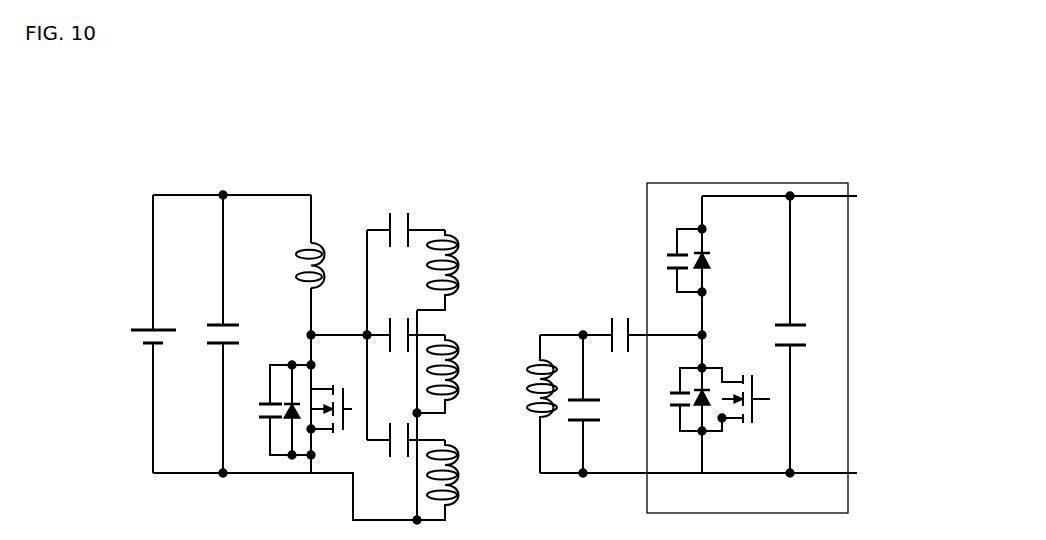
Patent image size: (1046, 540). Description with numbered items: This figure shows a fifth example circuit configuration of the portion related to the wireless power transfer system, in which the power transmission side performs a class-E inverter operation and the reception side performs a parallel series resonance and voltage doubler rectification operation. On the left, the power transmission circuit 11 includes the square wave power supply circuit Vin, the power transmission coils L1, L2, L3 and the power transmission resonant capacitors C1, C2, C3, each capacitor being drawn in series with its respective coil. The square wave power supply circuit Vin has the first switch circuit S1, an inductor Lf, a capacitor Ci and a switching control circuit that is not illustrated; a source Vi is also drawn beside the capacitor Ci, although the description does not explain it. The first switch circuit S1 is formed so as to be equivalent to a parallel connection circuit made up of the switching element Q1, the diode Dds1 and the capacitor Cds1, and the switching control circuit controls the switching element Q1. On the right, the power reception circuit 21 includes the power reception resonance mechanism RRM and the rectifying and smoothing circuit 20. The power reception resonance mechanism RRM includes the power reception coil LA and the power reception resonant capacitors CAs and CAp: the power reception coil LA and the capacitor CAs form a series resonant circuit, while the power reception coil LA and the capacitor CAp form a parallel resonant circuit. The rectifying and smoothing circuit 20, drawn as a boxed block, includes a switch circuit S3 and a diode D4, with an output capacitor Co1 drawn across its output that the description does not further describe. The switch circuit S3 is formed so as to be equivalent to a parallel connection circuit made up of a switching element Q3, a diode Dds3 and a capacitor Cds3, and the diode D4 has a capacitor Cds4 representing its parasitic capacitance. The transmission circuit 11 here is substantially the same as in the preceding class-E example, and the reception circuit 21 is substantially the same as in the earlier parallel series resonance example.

The power transmission circuit 11 is at (143, 108).
The power reception circuit 21 is at (520, 108).
The rectifying and smoothing circuit 20 is at (848, 183).
The square wave power supply circuit Vin is at (335, 168).
The DC input source Vi is at (147, 320).
The capacitor Ci is at (231, 334).
The inductor Lf is at (298, 265).
The capacitor Cds1 is at (271, 410).
The diode Dds1 is at (284, 436).
The switching element Q1 is at (329, 396).
The first switch circuit S1 is at (280, 446).
The power transmission resonant capacitor C1 is at (406, 216).
The power transmission resonant capacitor C2 is at (406, 320).
The power transmission resonant capacitor C3 is at (406, 427).
The power transmission coil L1 is at (451, 263).
The power transmission coil L2 is at (449, 368).
The power transmission coil L3 is at (449, 473).
The power reception coil LA is at (527, 404).
The power reception resonant capacitor CAs is at (606, 321).
The power reception resonant capacitor CAp is at (557, 487).
The power reception resonance mechanism RRM is at (573, 425).
The switch circuit S3 is at (679, 432).
The capacitor Cds4 is at (679, 246).
The diode D4 is at (716, 264).
The capacitor Cds3 is at (686, 413).
The diode Dds3 is at (722, 429).
The switching element Q3 is at (736, 381).
The output capacitor Co1 is at (806, 334).